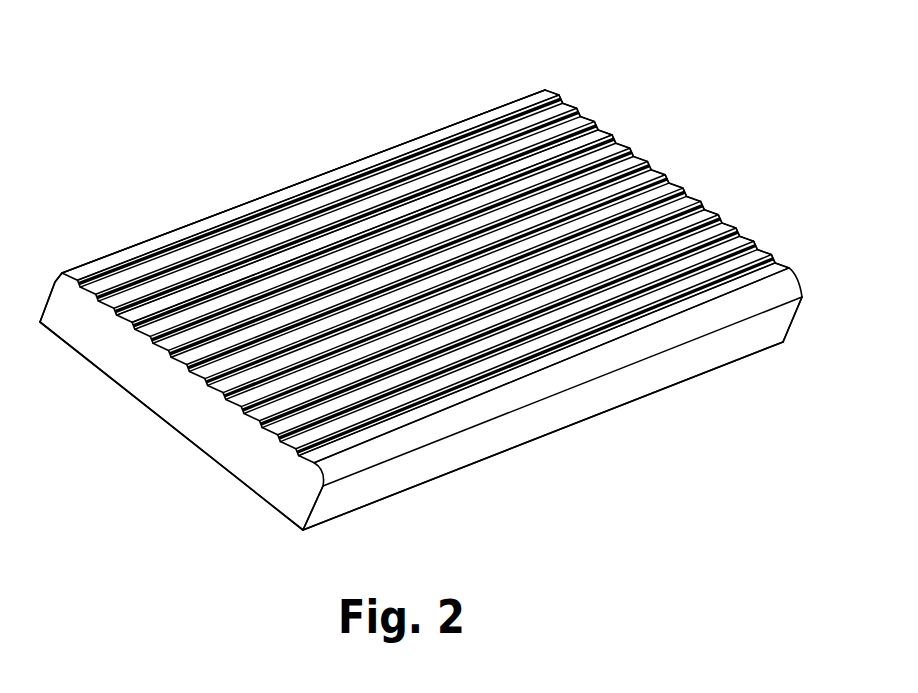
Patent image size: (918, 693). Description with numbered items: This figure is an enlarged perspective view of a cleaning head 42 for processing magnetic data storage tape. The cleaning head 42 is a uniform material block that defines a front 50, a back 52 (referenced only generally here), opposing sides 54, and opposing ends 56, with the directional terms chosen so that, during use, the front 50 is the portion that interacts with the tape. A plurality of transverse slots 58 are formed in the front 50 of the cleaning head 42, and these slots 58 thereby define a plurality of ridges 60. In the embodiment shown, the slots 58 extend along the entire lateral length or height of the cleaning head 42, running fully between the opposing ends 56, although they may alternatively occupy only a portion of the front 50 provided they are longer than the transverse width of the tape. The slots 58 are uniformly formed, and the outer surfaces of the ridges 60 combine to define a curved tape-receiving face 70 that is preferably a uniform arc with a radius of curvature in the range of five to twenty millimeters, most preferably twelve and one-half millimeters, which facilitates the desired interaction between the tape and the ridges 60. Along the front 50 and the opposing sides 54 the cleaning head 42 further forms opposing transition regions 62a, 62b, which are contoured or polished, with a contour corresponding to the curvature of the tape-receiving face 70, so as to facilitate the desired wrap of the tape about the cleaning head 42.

The cleaning head 42 is at (243, 118).
The front 50 is at (635, 132).
The back 52 is at (260, 498).
The opposing sides 54 is at (320, 175).
The opposing ends 56 is at (747, 225).
The transverse slots 58 is at (470, 140).
The ridges 60 is at (172, 337).
The transition region 62a is at (101, 258).
The transition region 62b is at (395, 433).
The tape-receiving face 70 is at (578, 135).